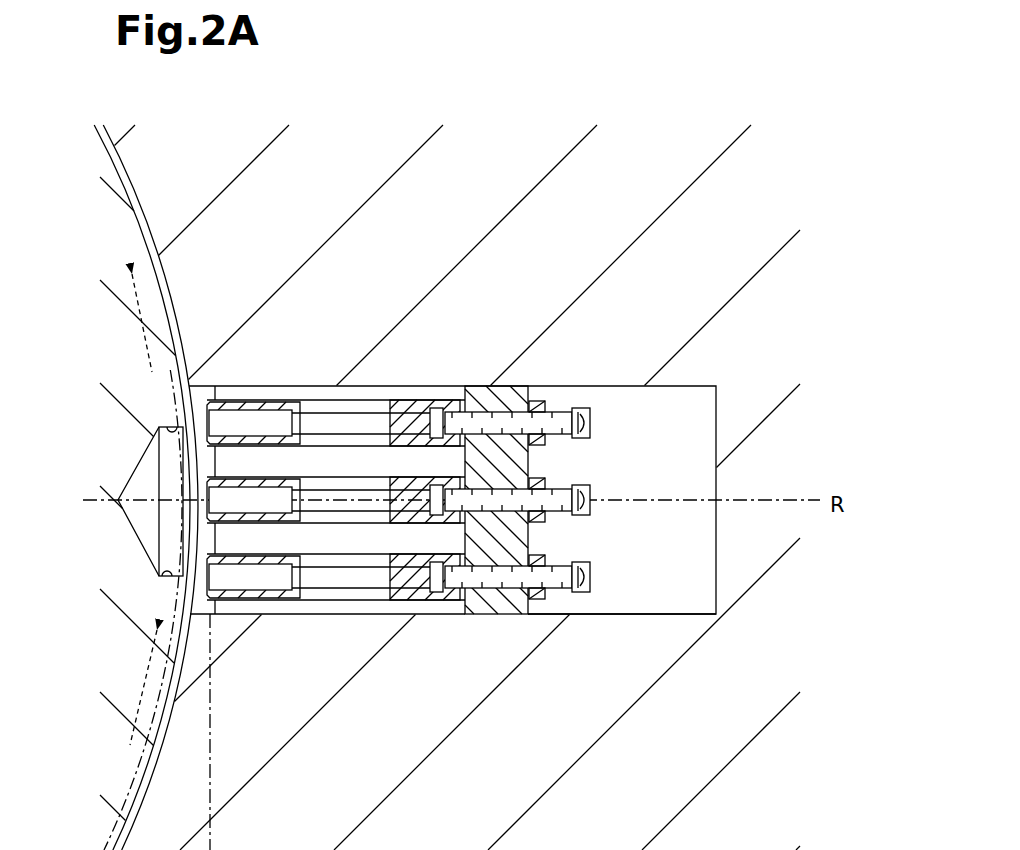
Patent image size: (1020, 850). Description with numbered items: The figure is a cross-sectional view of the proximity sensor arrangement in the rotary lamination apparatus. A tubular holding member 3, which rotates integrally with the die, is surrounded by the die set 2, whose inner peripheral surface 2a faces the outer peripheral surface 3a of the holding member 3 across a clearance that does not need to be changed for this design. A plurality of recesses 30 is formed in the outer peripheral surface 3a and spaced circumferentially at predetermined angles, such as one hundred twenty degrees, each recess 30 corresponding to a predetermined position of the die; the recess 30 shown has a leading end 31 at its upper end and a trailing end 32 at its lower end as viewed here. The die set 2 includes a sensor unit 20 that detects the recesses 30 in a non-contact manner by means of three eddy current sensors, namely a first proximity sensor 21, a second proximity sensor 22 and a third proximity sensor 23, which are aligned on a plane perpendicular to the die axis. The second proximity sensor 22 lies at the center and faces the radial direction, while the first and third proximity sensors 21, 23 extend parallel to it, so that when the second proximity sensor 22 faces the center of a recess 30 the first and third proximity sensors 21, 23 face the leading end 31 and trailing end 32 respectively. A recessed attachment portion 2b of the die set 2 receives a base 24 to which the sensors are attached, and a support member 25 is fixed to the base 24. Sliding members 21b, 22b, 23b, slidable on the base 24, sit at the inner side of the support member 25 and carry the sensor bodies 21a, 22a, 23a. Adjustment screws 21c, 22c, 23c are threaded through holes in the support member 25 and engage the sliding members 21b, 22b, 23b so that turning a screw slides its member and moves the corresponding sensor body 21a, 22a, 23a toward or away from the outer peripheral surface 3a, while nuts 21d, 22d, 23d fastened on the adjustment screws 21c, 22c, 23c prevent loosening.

The die set 2 is at (348, 147).
The inner peripheral surface 2a is at (170, 288).
The attachment portion 2b is at (620, 612).
The holding member 3 is at (114, 722).
The outer peripheral surface 3a is at (146, 780).
The sensor unit 20 is at (727, 378).
The first proximity sensor 21 is at (390, 385).
The sensor body 21a is at (253, 399).
The sliding member 21b is at (425, 400).
The adjustment screw 21c is at (613, 415).
The nut 21d is at (553, 398).
The second proximity sensor 22 is at (405, 478).
The sensor body 22a is at (259, 487).
The sliding member 22b is at (425, 488).
The adjustment screw 22c is at (613, 493).
The nut 22d is at (558, 516).
The third proximity sensor 23 is at (390, 612).
The sensor body 23a is at (259, 564).
The sliding member 23b is at (425, 565).
The adjustment screw 23c is at (613, 569).
The nut 23d is at (535, 602).
The base 24 is at (328, 616).
The support member 25 is at (492, 616).
The recess 30 is at (135, 522).
The leading end 31 is at (168, 427).
The trailing end 32 is at (160, 576).